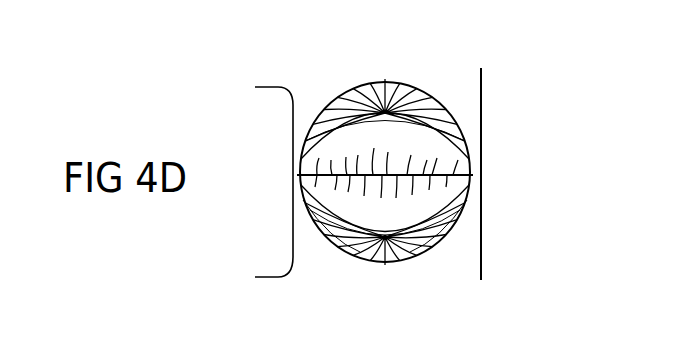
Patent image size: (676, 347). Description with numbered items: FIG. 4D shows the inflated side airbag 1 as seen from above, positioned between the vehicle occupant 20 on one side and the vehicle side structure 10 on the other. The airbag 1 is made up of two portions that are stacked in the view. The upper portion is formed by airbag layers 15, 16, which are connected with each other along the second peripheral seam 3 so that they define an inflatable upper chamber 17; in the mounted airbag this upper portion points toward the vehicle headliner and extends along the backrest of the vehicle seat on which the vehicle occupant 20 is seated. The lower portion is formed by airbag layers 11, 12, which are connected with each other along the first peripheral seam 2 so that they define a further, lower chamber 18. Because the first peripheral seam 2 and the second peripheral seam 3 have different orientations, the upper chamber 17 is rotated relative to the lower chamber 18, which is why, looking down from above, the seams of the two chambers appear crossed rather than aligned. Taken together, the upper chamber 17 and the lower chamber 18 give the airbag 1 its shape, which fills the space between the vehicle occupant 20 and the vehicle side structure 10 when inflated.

The airbag 1 is at (418, 64).
The first peripheral seam 2 is at (390, 245).
The second peripheral seam 3 is at (420, 166).
The vehicle side structure 10 is at (482, 143).
The airbag layer 11 is at (458, 217).
The airbag layer 12 is at (325, 238).
The airbag layer 15 is at (363, 130).
The airbag layer 16 is at (410, 218).
The upper chamber 17 is at (430, 197).
The lower chamber 18 is at (352, 242).
The vehicle occupant 20 is at (272, 110).